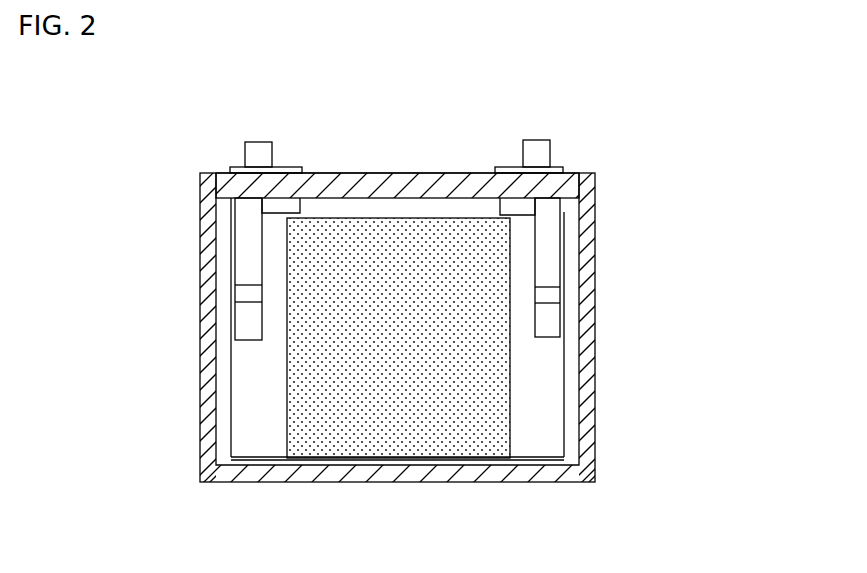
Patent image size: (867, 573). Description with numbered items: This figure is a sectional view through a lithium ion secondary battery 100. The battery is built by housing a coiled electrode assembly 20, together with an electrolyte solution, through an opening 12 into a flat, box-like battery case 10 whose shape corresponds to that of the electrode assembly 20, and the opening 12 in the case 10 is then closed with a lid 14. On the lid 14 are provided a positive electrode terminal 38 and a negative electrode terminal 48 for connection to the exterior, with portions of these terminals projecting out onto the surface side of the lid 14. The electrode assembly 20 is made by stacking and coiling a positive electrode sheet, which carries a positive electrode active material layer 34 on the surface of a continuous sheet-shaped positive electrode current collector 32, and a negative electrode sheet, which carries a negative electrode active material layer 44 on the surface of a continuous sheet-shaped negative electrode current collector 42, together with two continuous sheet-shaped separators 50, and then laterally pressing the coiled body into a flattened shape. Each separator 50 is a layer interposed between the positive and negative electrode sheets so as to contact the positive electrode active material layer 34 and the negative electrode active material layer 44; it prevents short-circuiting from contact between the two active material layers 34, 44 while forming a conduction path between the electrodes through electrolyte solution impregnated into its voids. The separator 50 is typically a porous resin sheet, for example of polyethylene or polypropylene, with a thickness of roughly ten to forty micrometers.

The lithium ion secondary battery 100 is at (170, 62).
The battery case 10 is at (598, 423).
The opening 12 is at (407, 324).
The lid 14 is at (339, 172).
The coiled electrode assembly 20 is at (398, 336).
The positive electrode current collector 32 is at (260, 448).
The positive electrode active material layer 34 is at (347, 425).
The positive electrode terminal 38 is at (250, 142).
The negative electrode current collector 42 is at (532, 448).
The negative electrode active material layer 44 is at (480, 425).
The negative electrode terminal 48 is at (537, 147).
The separator 50 is at (413, 440).